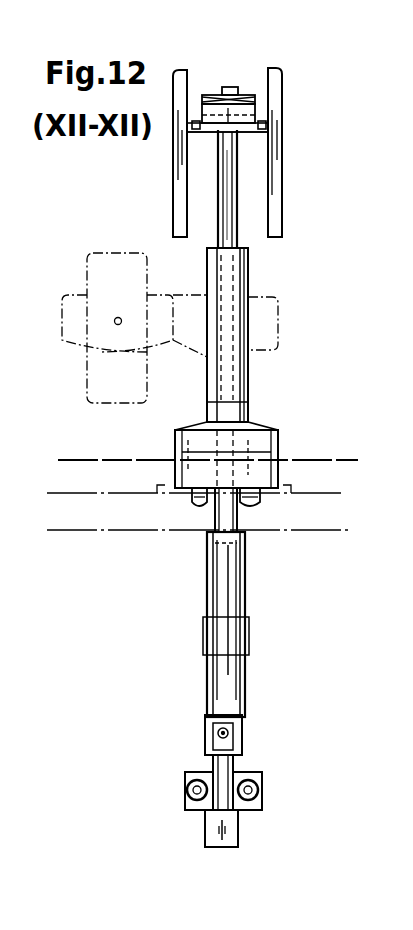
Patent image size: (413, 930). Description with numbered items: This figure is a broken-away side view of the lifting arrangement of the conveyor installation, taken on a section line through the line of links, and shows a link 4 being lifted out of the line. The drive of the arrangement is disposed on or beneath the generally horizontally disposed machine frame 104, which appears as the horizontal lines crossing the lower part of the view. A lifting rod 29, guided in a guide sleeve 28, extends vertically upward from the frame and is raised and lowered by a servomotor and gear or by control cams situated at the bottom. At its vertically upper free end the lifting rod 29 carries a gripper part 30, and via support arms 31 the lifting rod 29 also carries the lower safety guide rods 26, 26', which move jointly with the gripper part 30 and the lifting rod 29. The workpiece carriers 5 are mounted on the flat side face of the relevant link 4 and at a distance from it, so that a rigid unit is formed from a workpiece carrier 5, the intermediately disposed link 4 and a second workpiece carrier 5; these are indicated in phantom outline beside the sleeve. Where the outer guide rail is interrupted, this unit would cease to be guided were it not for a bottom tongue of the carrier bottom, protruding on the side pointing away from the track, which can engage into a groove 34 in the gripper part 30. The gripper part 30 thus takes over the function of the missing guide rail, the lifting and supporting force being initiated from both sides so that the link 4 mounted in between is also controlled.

The link 4 is at (70, 333).
The workpiece carrier 5 is at (100, 378).
The lower safety guide rod 26 is at (154, 153).
The lower safety guide rod 26' is at (303, 152).
The guide sleeve 28 is at (248, 388).
The lifting rod 29 is at (230, 228).
The gripper part 30 is at (243, 97).
The support arm 31 is at (262, 123).
The groove 34 is at (210, 98).
The machine frame 104 is at (97, 522).